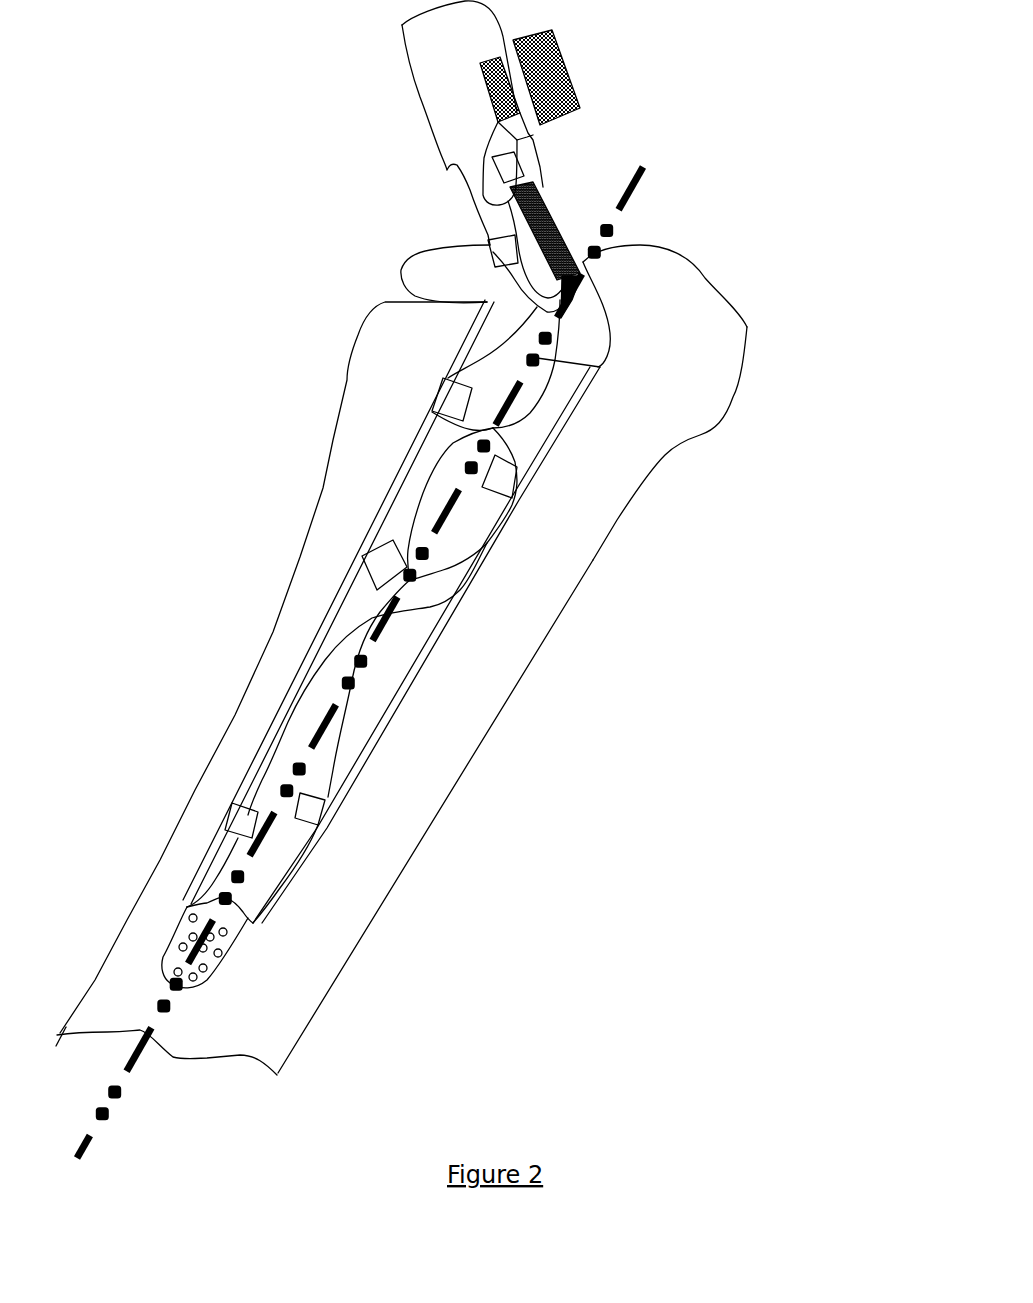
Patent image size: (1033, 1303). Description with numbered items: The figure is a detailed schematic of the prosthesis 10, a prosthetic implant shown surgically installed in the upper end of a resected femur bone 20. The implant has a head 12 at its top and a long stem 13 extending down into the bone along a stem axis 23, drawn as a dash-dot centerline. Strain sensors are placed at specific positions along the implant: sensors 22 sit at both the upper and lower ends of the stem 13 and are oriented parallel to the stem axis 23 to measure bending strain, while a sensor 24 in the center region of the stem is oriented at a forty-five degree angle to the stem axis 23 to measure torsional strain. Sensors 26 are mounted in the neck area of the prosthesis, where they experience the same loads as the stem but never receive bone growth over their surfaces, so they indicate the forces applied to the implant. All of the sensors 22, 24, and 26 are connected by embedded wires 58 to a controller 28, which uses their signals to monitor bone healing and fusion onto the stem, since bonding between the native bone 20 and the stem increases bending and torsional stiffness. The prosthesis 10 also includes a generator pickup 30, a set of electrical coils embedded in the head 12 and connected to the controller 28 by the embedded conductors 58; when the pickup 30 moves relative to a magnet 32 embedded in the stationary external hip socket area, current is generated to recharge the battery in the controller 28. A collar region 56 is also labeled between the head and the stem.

The prosthesis 10 is at (593, 333).
The head 12 is at (430, 48).
The stem 13 is at (397, 658).
The femur bone 20 is at (465, 725).
The strain sensors 22 is at (493, 467).
The stem axis 23 is at (115, 1092).
The strain sensor 24 is at (377, 563).
The strain sensors 26 is at (497, 250).
The controller 28 is at (552, 245).
The generator pickup 30 is at (485, 93).
The magnet 32 is at (572, 75).
The collar 56 is at (480, 148).
The wires 58 is at (410, 493).